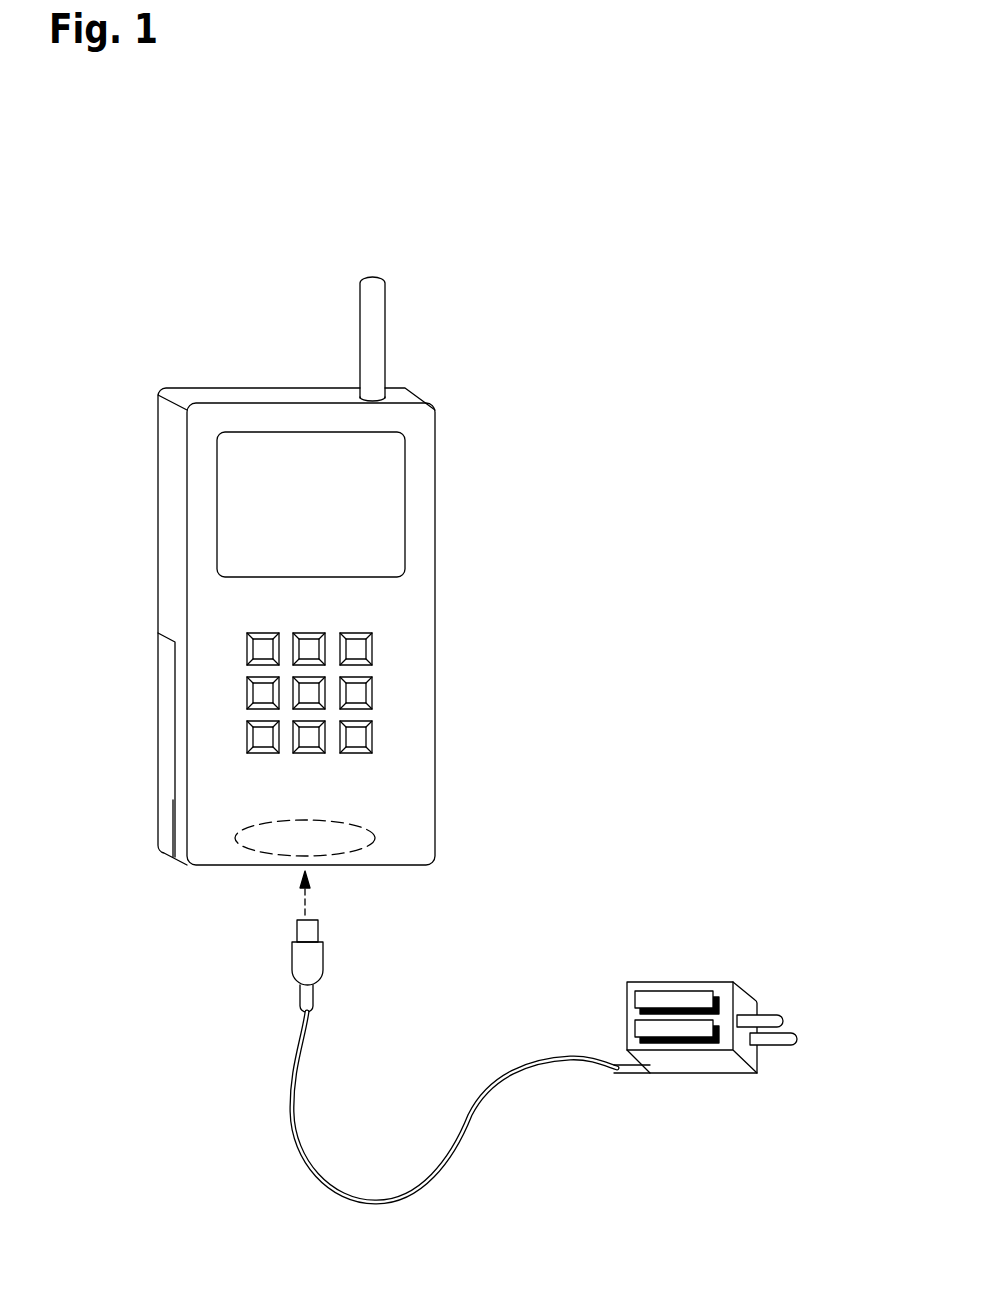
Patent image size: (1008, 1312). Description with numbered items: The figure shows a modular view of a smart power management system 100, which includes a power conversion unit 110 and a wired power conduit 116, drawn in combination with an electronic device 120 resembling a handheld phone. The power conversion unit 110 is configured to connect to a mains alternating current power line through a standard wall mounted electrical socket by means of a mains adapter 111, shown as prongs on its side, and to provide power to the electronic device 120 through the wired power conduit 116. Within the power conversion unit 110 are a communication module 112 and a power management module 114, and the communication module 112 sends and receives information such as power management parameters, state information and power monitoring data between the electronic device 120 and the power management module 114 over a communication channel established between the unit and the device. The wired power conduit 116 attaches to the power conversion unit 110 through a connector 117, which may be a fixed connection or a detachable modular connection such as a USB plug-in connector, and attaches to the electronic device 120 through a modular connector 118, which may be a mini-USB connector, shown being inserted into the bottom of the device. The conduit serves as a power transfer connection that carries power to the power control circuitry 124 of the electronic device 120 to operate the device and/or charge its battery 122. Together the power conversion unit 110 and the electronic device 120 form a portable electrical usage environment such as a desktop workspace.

The smart power management system 100 is at (817, 138).
The power conversion unit 110 is at (747, 961).
The mains adapter 111 is at (743, 1047).
The communication module 112 is at (678, 1000).
The power management module 114 is at (693, 1032).
The wired power conduit 116 is at (472, 1122).
The connector 117 is at (622, 1077).
The modular connector 118 is at (296, 930).
The electronic device 120 is at (157, 431).
The battery 122 is at (157, 743).
The power control circuitry 124 is at (322, 849).